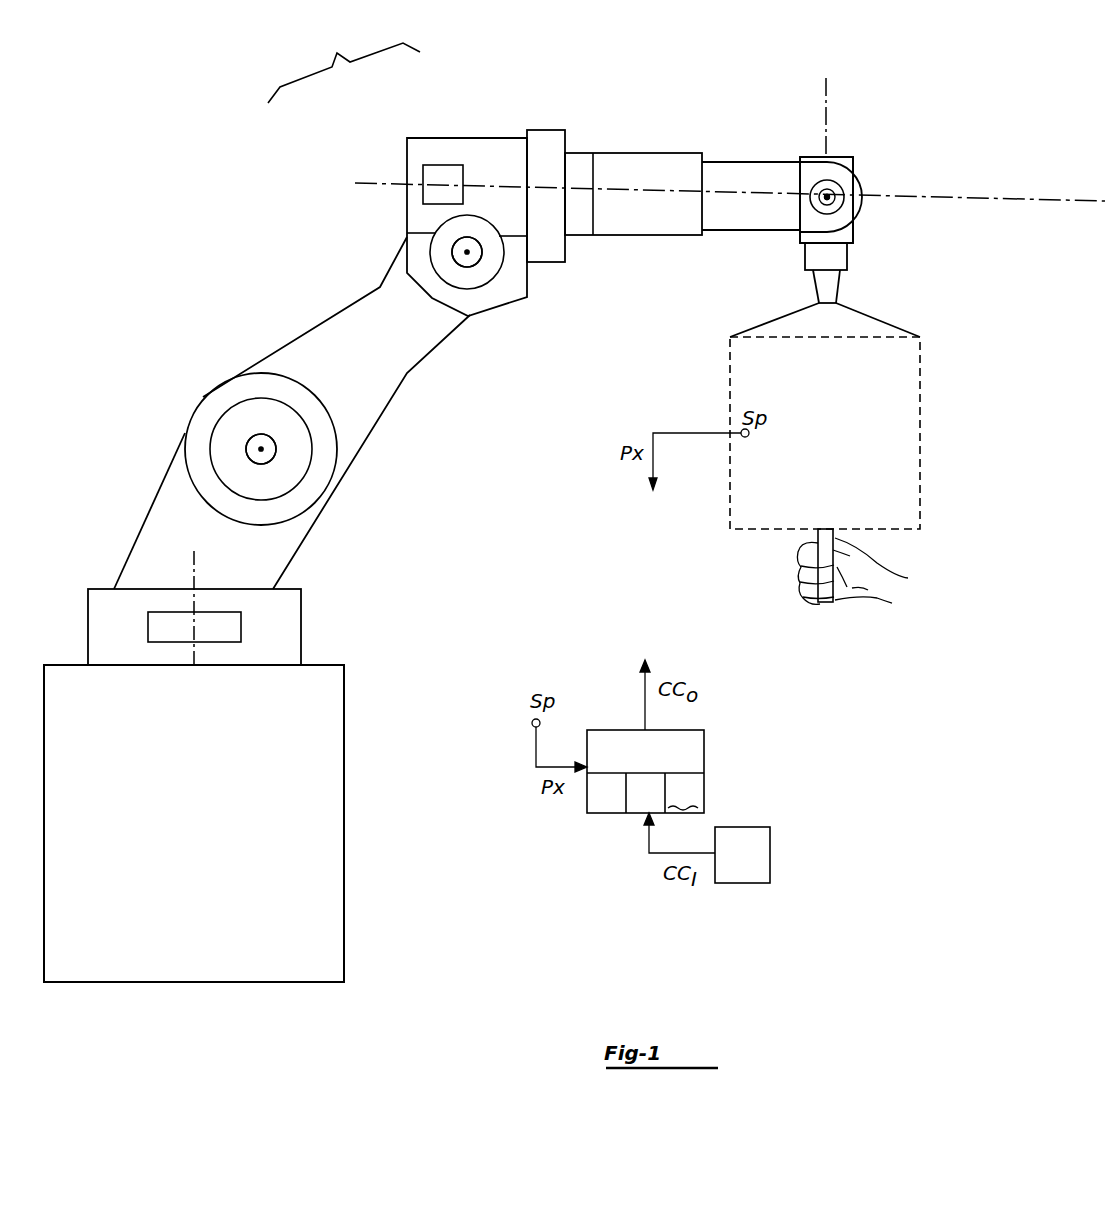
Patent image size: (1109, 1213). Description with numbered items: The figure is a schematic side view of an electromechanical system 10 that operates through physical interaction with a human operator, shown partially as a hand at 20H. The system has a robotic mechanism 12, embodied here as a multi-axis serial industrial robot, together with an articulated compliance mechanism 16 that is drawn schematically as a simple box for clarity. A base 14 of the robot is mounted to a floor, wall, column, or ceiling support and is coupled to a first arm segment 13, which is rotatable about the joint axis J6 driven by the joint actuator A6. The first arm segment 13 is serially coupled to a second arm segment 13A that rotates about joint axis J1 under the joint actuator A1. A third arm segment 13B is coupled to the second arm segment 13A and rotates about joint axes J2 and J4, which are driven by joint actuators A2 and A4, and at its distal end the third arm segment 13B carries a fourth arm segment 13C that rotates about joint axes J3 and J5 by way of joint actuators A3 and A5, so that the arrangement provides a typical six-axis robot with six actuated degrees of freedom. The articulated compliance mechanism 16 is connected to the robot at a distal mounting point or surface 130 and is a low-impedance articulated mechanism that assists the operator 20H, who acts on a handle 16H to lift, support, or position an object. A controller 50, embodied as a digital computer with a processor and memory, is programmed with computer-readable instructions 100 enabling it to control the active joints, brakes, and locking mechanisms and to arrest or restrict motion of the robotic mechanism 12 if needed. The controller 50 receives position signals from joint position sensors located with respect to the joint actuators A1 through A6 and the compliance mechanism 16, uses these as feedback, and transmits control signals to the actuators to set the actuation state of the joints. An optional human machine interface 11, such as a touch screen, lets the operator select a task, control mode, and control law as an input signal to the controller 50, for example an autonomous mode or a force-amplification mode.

The electromechanical system 10 is at (888, 46).
The human machine interface 11 is at (770, 855).
The robotic mechanism 12 is at (344, 65).
The first arm segment 13 is at (168, 517).
The second arm segment 13A is at (350, 353).
The third arm segment 13B is at (748, 177).
The fourth arm segment 13C is at (778, 264).
The distal mounting point 130 is at (790, 289).
The base 14 is at (203, 818).
The articulated compliance mechanism 16 is at (928, 298).
The handle 16H is at (825, 603).
The human operator 20H is at (868, 562).
The controller 50 is at (674, 771).
The computer-readable instructions 100 is at (704, 770).
The actuated joint J1 is at (246, 449).
The actuated joint J2 is at (462, 252).
The actuated joint J3 is at (830, 197).
The actuated joint J4 is at (370, 182).
The actuated joint J5 is at (828, 103).
The actuated joint J6 is at (183, 570).
The joint actuator A1 is at (276, 449).
The joint actuator A2 is at (470, 256).
The joint actuator A3 is at (826, 181).
The joint actuator A4 is at (445, 165).
The joint actuator A5 is at (837, 157).
The joint actuator A6 is at (148, 627).